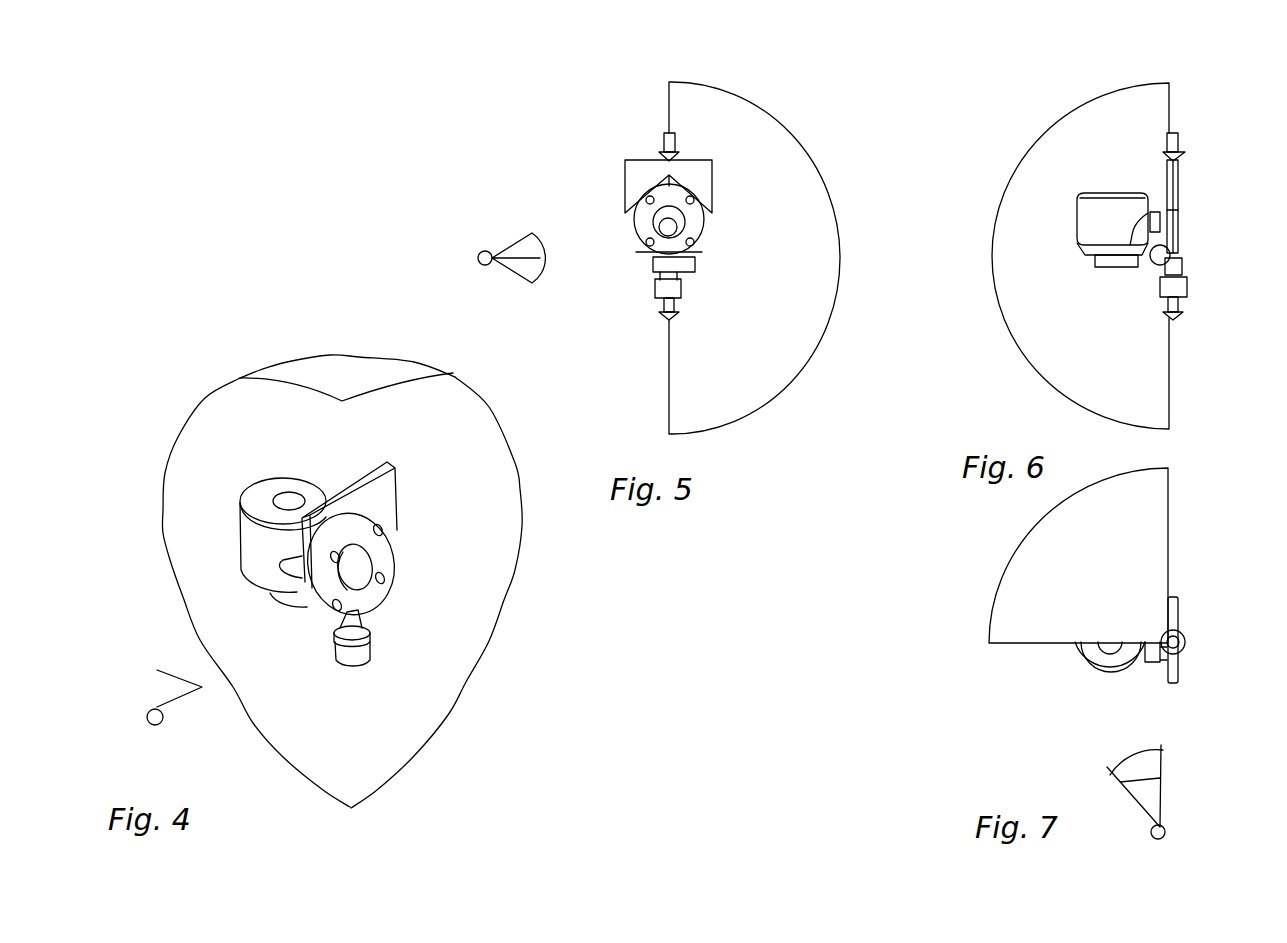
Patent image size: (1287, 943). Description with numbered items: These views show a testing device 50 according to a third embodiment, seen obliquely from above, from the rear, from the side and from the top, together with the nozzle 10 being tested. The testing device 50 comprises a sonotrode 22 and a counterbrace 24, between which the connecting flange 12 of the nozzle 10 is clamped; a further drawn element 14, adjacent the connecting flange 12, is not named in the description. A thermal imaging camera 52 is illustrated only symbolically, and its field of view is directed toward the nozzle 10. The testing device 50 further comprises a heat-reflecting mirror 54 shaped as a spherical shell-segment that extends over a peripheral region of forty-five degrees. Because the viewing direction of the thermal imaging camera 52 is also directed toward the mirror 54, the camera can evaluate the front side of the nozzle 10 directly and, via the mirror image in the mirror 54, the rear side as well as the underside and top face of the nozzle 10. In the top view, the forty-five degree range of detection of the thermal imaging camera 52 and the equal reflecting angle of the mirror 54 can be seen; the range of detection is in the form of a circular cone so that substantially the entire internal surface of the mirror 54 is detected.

In FIG. 4, the nozzle 10 is at (241, 532).
In FIG. 4, the connecting flange 12 is at (377, 563).
In FIG. 5, the connecting flange 12 is at (643, 223).
In FIG. 5, the housing 14 is at (700, 245).
In FIG. 6, the housing 14 is at (1132, 226).
In FIG. 7, the housing 14 is at (1130, 640).
In FIG. 4, the sonotrode 22 is at (364, 645).
In FIG. 4, the counterbrace 24 is at (385, 502).
In FIG. 4, the testing device 50 is at (503, 640).
In FIG. 5, the testing device 50 is at (650, 118).
In FIG. 6, the testing device 50 is at (1187, 142).
In FIG. 7, the testing device 50 is at (1022, 658).
In FIG. 4, the thermal imaging camera 52 is at (163, 729).
In FIG. 7, the thermal imaging camera 52 is at (1166, 826).
In FIG. 4, the heat-reflecting mirror 54 is at (396, 751).
In FIG. 5, the heat-reflecting mirror 54 is at (750, 397).
In FIG. 6, the heat-reflecting mirror 54 is at (1080, 256).
In FIG. 7, the heat-reflecting mirror 54 is at (1008, 590).